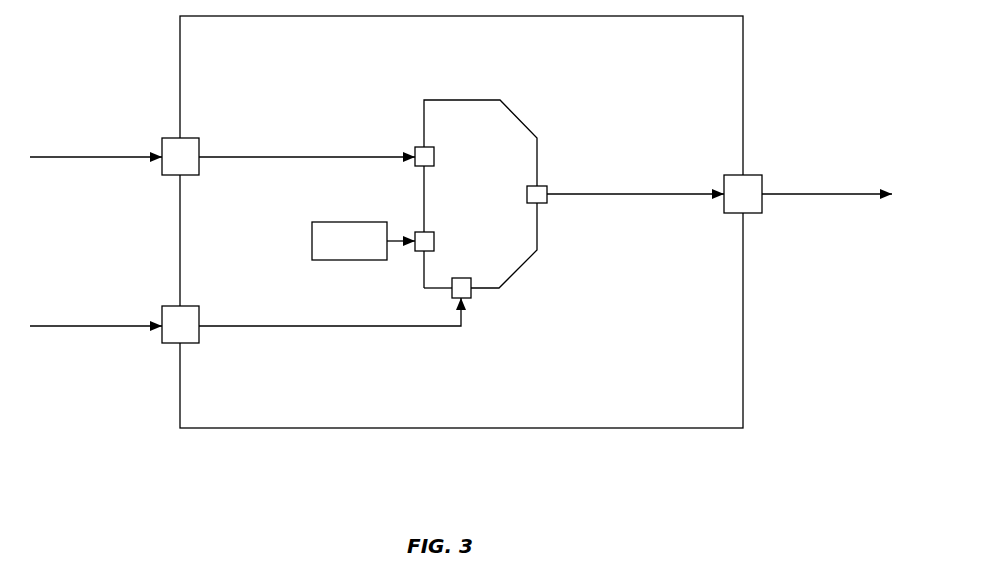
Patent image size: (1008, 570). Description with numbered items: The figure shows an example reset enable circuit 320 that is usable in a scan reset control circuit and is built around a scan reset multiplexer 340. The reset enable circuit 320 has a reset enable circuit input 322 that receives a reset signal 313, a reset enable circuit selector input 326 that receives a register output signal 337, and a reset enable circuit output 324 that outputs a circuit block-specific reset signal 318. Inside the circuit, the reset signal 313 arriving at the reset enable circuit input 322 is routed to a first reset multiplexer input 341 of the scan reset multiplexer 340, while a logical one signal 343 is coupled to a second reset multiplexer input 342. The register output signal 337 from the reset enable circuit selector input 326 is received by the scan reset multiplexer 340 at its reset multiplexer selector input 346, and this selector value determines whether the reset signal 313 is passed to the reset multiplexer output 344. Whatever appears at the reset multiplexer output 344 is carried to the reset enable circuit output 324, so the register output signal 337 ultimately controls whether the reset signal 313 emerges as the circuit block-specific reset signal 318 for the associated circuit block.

The reset enable circuit 320 is at (461, 222).
The reset signal 313 is at (100, 159).
The reset enable circuit input 322 is at (199, 138).
The register output signal 337 is at (100, 328).
The reset enable circuit selector input 326 is at (199, 306).
The logical "1" signal 343 is at (350, 222).
The scan reset multiplexer 340 is at (480, 194).
The first reset multiplexer input 341 is at (420, 147).
The second reset multiplexer input 342 is at (420, 251).
The reset multiplexer output 344 is at (535, 186).
The reset multiplexer selector input 346 is at (471, 295).
The reset enable circuit output 324 is at (750, 175).
The circuit block-specific reset signal 318 is at (815, 196).